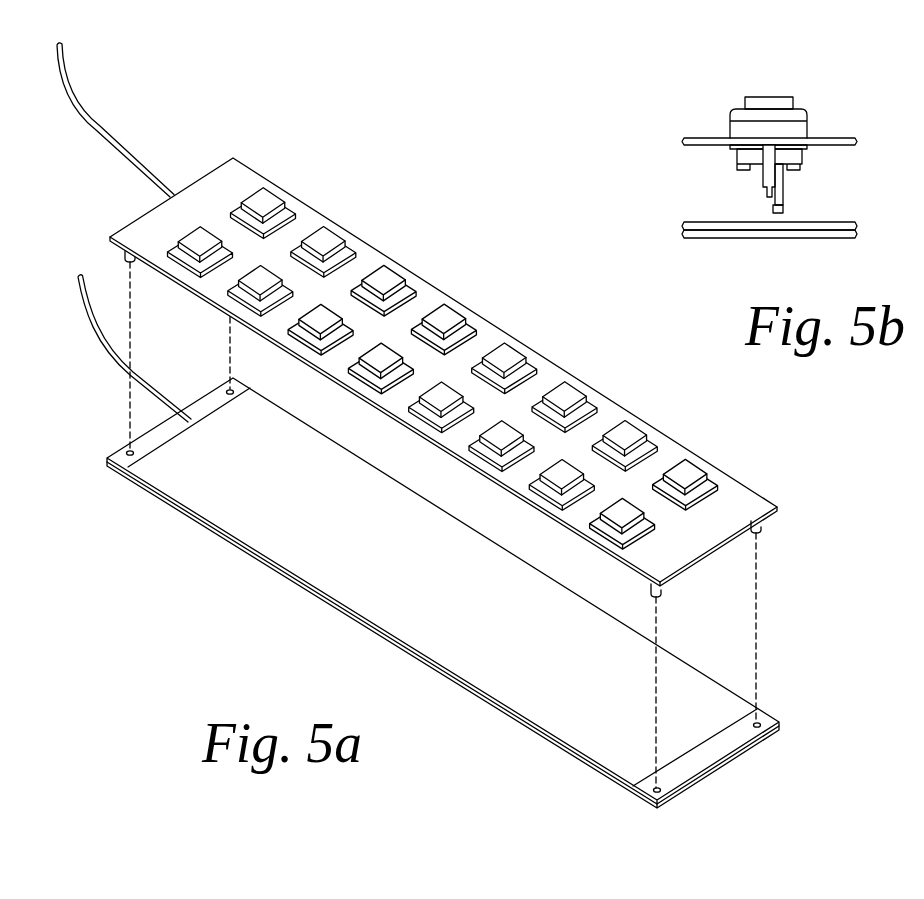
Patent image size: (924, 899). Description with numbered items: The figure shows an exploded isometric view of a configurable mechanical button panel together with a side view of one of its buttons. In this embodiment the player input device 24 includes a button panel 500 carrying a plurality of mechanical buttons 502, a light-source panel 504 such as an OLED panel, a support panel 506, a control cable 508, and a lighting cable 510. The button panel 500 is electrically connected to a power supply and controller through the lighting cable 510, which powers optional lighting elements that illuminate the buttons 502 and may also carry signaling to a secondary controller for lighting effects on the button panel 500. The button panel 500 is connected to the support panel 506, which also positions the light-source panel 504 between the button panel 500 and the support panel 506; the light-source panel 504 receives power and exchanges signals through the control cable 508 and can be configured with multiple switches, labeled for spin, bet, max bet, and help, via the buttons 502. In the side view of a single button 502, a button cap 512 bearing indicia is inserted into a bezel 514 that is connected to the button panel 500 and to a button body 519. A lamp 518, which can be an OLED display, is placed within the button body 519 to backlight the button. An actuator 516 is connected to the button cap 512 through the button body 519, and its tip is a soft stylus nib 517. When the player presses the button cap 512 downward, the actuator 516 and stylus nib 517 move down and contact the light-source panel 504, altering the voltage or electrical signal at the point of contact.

In FIG. 5A, the player input device 24 is at (445, 135).
In FIG. 5A, the button panel 500 is at (753, 493).
In FIG. 5B, the button panel 500 is at (843, 137).
In FIG. 5A, the mechanical button 502 is at (322, 243).
In FIG. 5B, the mechanical button 502 is at (813, 77).
In FIG. 5A, the light-source panel 504 is at (162, 491).
In FIG. 5B, the light-source panel 504 is at (690, 222).
In FIG. 5A, the support panel 506 is at (730, 752).
In FIG. 5B, the support panel 506 is at (690, 237).
In FIG. 5A, the control cable 508 is at (90, 332).
In FIG. 5A, the lighting cable 510 is at (113, 143).
In FIG. 5B, the button cap 512 is at (761, 98).
In FIG. 5B, the bezel 514 is at (735, 128).
In FIG. 5B, the actuator 516 is at (784, 183).
In FIG. 5B, the stylus nib 517 is at (784, 207).
In FIG. 5B, the lamp 518 is at (762, 182).
In FIG. 5B, the button body 519 is at (803, 153).